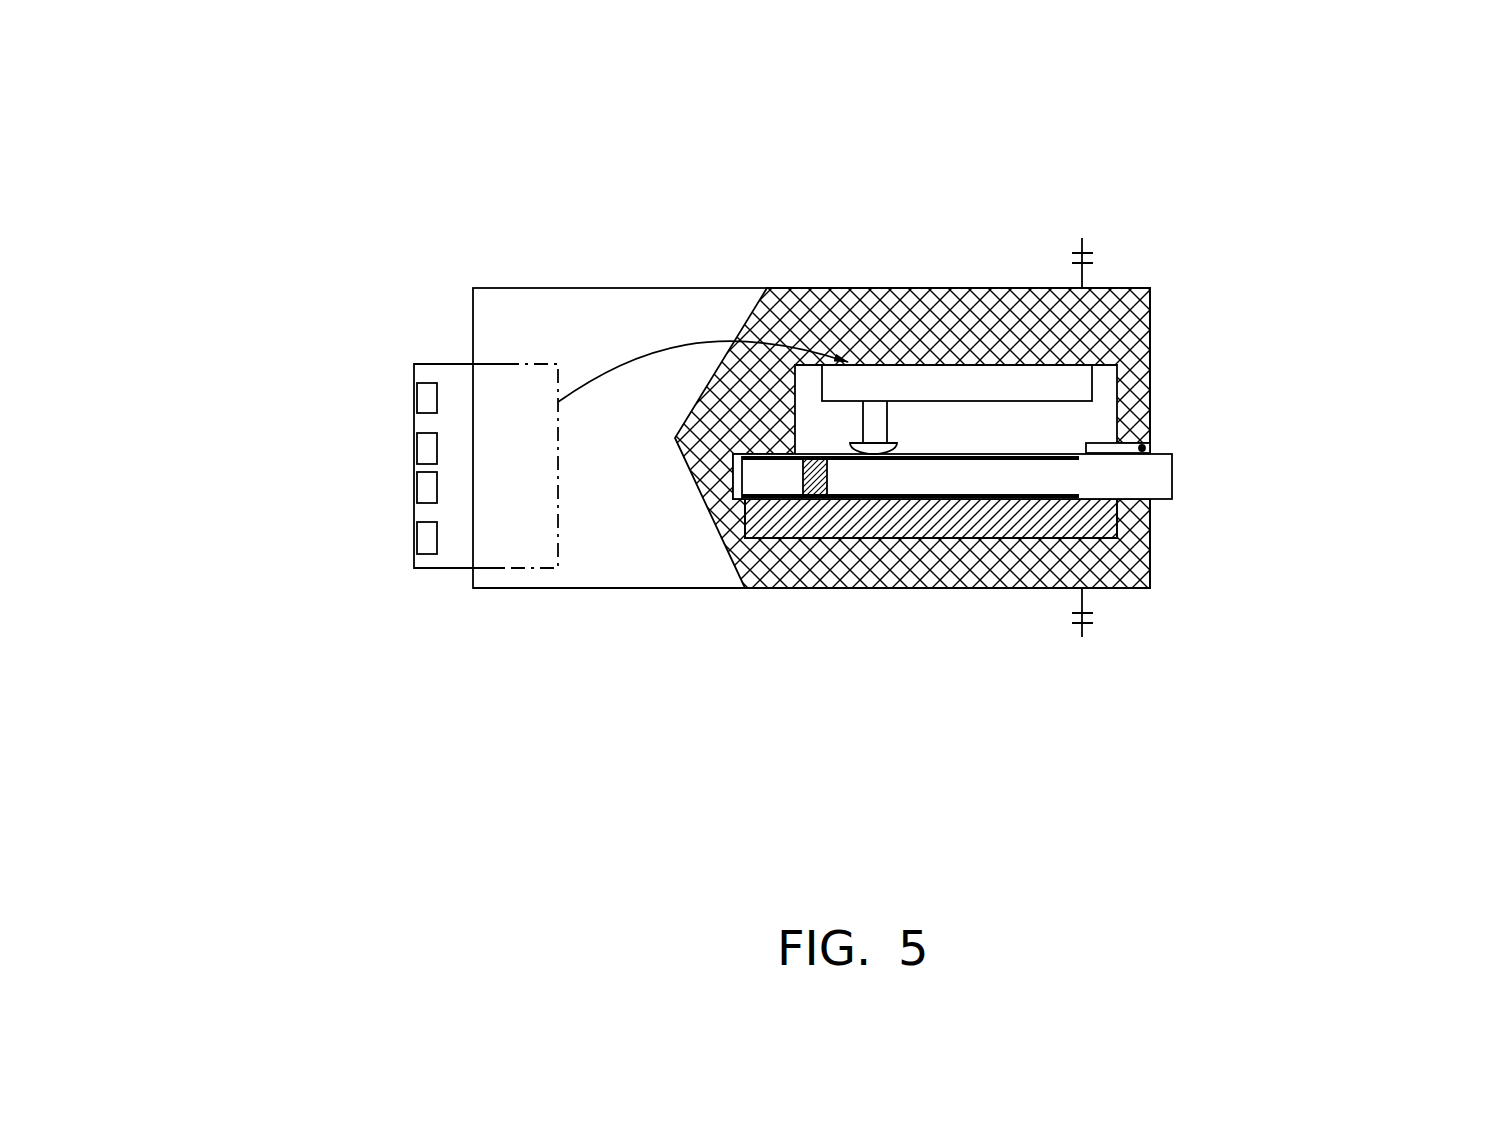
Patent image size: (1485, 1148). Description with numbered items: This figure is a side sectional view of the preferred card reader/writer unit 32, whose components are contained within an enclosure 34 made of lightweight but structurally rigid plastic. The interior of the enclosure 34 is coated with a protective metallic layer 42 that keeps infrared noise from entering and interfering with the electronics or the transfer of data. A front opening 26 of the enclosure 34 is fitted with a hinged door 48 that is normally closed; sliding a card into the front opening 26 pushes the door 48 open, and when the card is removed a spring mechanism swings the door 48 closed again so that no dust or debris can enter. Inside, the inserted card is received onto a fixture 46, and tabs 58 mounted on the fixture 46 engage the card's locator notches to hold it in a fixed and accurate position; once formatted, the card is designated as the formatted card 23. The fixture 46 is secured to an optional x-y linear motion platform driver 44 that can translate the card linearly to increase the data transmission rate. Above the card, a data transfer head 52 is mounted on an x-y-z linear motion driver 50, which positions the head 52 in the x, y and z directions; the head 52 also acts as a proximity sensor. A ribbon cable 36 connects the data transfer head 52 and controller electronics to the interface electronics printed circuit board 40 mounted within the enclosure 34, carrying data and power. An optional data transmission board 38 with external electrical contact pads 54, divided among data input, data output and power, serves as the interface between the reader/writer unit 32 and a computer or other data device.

The formatted card 23 is at (1140, 480).
The front opening 26 is at (1195, 480).
The reader/writer unit 32 is at (540, 288).
The enclosure 34 is at (1152, 368).
The ribbon cable 36 is at (602, 378).
The data transmission board 38 is at (412, 505).
The interface electronics printed circuit board 40 is at (507, 542).
The protective metallic layer 42 is at (587, 575).
The x-y linear motion platform driver 44 is at (940, 538).
The fixture 46 is at (1068, 505).
The hinged door 48 is at (1123, 447).
The x-y-z linear motion driver 50 is at (1022, 384).
The data transfer head 52 is at (877, 443).
The electrical contact pads 54 is at (423, 450).
The tabs 58 is at (823, 500).